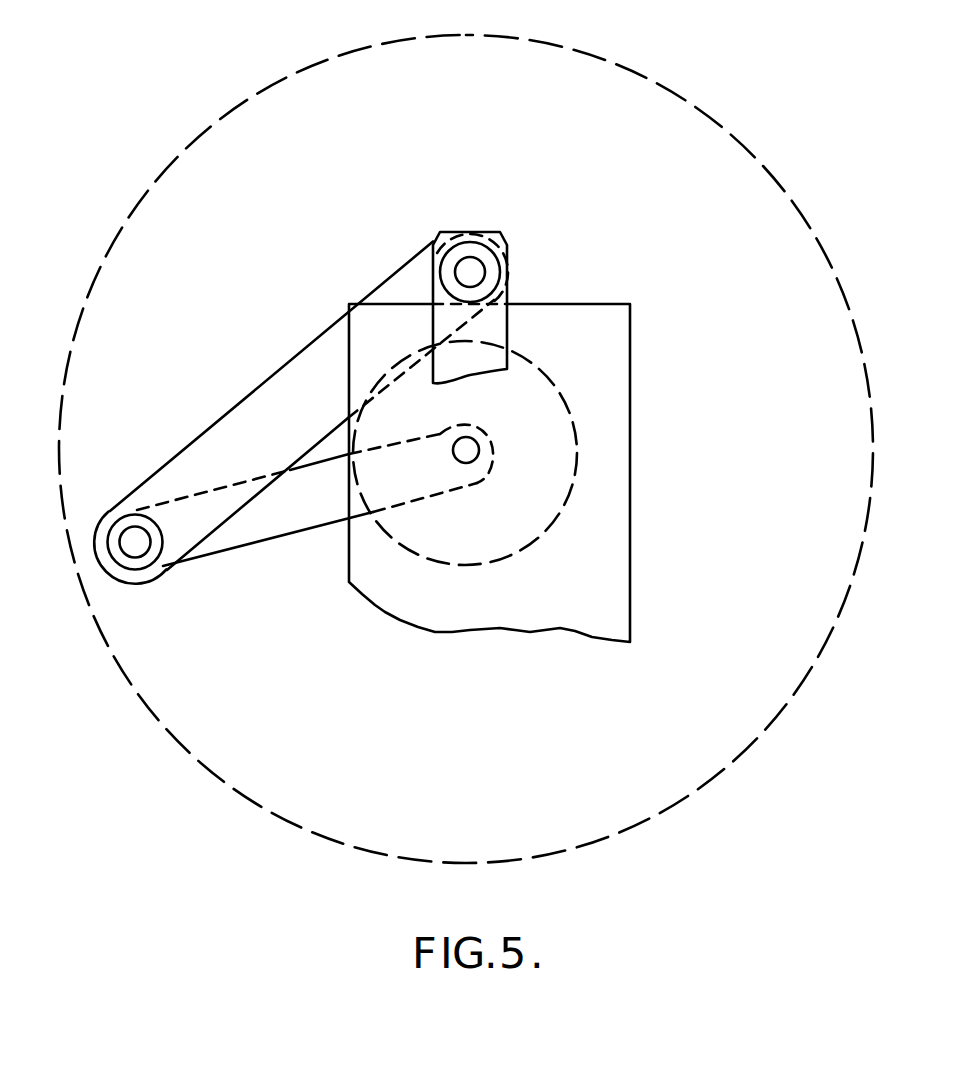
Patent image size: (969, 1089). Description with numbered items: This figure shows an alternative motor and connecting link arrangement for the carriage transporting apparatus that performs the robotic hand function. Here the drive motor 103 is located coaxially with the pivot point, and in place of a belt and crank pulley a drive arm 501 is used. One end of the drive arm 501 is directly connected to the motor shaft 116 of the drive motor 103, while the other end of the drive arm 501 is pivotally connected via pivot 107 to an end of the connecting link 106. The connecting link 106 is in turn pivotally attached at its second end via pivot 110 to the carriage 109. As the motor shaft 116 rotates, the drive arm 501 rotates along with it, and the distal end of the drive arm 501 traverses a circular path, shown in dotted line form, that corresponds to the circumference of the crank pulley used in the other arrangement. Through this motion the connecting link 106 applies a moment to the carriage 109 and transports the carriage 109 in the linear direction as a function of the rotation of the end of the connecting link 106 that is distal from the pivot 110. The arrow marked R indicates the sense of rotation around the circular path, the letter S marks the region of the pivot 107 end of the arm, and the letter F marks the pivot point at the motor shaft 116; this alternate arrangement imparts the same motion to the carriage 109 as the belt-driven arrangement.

The drive motor 103 is at (430, 560).
The connecting link 106 is at (272, 383).
The pivot 107 is at (135, 547).
The carriage 109 is at (498, 328).
The pivot 110 is at (470, 272).
The motor shaft 116 is at (472, 450).
The drive arm 501 is at (230, 540).
The direction of rotation R is at (395, 21).
The shaft S is at (121, 507).
The pivot fulcrum F is at (488, 463).